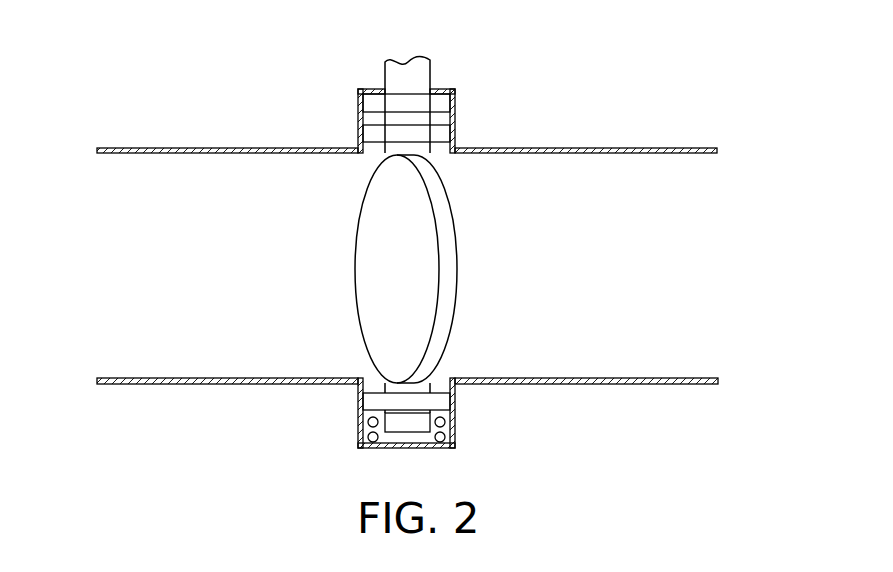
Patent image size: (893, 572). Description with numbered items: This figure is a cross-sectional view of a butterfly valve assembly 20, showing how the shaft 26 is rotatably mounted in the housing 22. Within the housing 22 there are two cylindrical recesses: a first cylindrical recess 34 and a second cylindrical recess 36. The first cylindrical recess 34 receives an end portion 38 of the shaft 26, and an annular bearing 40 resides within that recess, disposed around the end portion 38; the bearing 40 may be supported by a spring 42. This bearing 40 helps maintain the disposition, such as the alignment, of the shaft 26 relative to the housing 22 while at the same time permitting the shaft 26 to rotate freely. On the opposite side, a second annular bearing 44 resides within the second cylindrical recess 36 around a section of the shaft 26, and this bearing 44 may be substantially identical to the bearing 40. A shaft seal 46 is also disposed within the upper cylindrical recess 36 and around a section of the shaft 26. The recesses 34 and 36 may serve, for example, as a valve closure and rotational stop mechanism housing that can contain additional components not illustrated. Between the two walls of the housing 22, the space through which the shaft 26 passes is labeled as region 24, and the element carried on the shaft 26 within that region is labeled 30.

The butterfly valve assembly 20 is at (599, 108).
The housing 22 is at (652, 148).
The chamber 24 is at (216, 276).
The shaft 26 is at (431, 79).
The disc 30 is at (457, 262).
The first cylindrical recess 34 is at (456, 421).
The second cylindrical recess 36 is at (456, 122).
The end portion 38 is at (405, 430).
The annular bearing 40 is at (372, 403).
The spring 42 is at (442, 440).
The annular bearing 44 is at (368, 135).
The shaft seal 46 is at (366, 102).